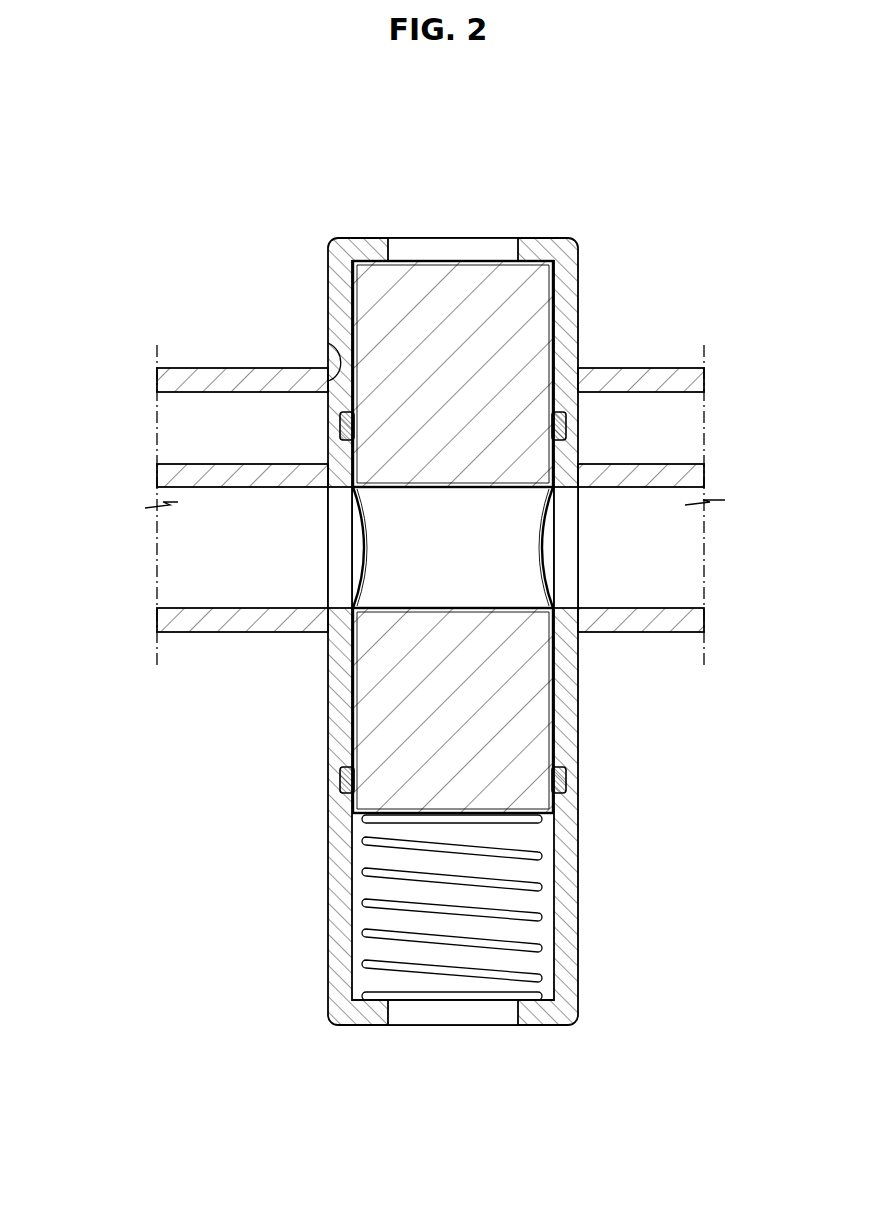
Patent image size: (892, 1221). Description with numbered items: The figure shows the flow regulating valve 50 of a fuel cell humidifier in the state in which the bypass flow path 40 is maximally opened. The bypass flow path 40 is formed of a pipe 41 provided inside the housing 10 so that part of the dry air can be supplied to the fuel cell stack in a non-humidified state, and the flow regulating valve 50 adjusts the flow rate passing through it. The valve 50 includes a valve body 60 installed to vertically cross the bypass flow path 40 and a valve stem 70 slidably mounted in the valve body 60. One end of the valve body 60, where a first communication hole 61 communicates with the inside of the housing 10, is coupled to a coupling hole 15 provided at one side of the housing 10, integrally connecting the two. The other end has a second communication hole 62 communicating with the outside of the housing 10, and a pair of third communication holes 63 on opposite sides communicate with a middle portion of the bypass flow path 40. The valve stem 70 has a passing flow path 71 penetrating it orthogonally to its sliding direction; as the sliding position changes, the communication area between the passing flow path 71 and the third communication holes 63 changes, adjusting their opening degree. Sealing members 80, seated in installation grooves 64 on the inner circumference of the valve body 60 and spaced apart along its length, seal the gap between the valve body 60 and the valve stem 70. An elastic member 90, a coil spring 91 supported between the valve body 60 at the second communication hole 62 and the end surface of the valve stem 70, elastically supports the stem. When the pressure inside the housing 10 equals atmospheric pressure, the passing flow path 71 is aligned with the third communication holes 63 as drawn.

The housing 10 is at (195, 393).
The coupling hole 15 is at (330, 352).
The bypass flow path 40 is at (243, 585).
The pipe 41 is at (635, 628).
The flow regulating valve 50 is at (603, 230).
The valve body 60 is at (579, 812).
The first communication hole 61 is at (460, 244).
The second communication hole 62 is at (456, 1014).
The third communication hole 63 is at (333, 534).
The installation groove 64 is at (578, 445).
The valve stem 70 is at (397, 537).
The passing flow path 71 is at (465, 558).
The sealing member 80 is at (340, 425).
The elastic member 90 is at (527, 907).
The coil spring 91 is at (530, 906).